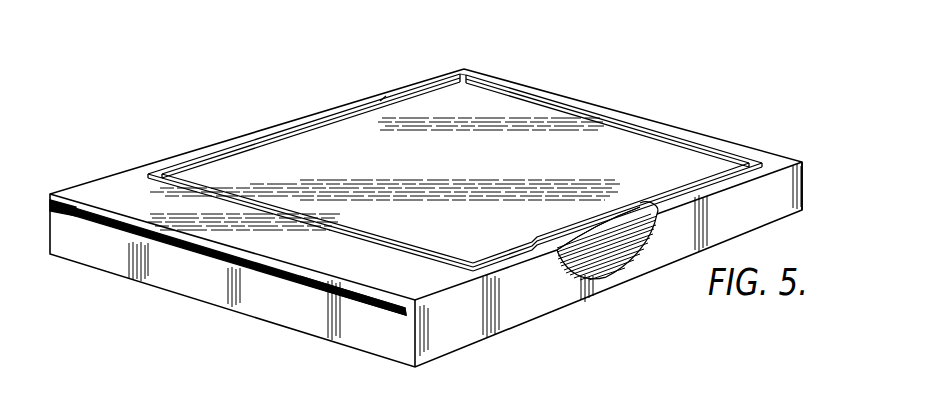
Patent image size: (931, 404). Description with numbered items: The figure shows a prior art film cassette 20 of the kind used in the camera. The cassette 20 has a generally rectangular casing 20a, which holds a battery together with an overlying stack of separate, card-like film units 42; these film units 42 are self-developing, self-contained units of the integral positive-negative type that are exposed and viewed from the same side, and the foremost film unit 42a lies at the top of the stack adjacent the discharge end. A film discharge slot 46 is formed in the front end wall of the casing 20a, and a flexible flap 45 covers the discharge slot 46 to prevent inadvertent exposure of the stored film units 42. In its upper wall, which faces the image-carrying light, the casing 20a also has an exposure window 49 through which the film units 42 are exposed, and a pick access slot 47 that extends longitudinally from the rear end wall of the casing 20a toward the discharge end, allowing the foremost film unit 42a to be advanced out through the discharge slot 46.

The film cassette 20 is at (664, 105).
The casing 20a is at (803, 186).
The film units 42 is at (583, 272).
The foremost film unit 42a is at (597, 238).
The flexible flap 45 is at (97, 226).
The film discharge slot 46 is at (313, 277).
The pick access slot 47 is at (473, 65).
The exposure window 49 is at (530, 103).